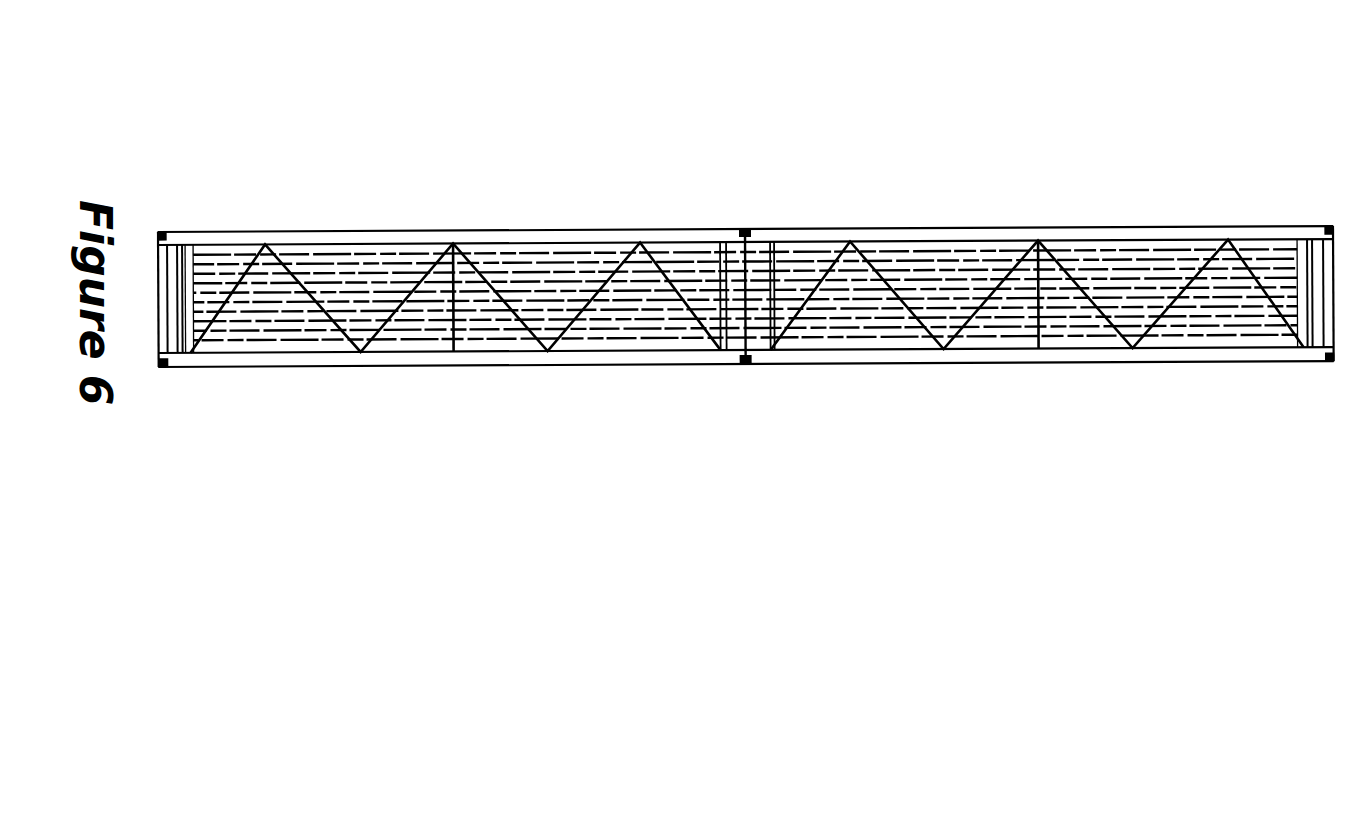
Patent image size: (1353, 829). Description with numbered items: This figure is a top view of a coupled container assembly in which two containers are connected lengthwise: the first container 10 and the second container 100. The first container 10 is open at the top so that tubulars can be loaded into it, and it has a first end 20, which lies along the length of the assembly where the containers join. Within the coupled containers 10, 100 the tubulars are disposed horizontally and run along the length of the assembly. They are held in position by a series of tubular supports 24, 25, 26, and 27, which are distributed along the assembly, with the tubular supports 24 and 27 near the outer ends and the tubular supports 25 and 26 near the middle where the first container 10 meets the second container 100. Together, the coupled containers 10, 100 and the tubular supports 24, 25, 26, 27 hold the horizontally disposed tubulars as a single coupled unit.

The first container 10 is at (430, 193).
The first end 20 is at (508, 245).
The tubular support 24 is at (200, 252).
The tubular support 25 is at (773, 247).
The tubular support 26 is at (713, 238).
The tubular support 27 is at (1303, 243).
The second container 100 is at (1033, 190).